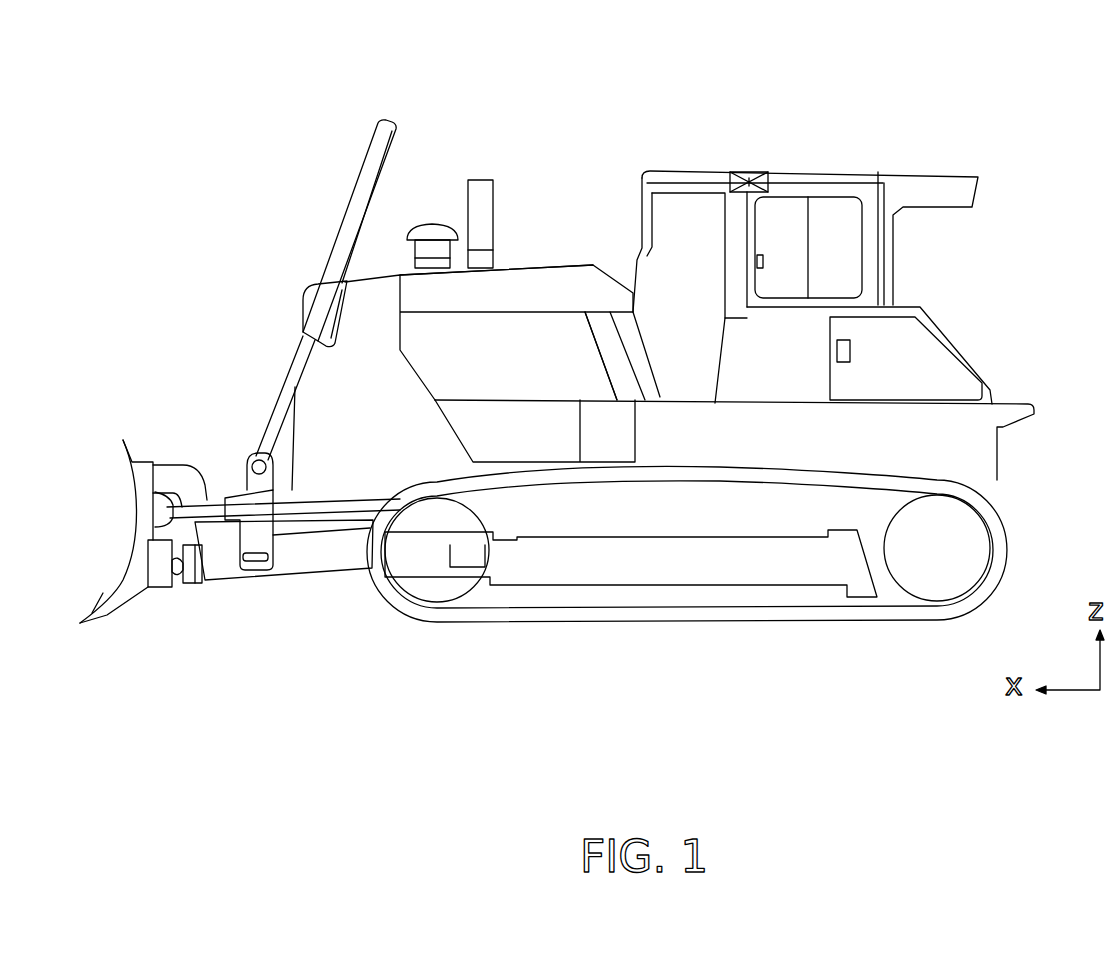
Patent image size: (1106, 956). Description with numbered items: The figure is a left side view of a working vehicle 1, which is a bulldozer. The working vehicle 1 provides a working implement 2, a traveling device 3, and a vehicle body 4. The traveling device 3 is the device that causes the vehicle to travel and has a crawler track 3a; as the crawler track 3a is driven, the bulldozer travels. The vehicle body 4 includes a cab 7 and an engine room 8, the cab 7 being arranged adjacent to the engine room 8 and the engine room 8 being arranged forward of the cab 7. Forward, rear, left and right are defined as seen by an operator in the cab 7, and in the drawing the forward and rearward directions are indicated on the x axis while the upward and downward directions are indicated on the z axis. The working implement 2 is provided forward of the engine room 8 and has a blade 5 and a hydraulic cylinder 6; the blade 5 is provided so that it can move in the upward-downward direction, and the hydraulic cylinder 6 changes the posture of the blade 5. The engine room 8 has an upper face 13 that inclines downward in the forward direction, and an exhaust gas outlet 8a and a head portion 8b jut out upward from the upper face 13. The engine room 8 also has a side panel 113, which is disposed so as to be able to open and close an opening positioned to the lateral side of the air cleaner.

The working vehicle 1 is at (268, 112).
The working implement 2 is at (200, 437).
The traveling device 3 is at (524, 630).
The crawler track 3a is at (638, 628).
The vehicle body 4 is at (816, 110).
The blade 5 is at (143, 510).
The hydraulic cylinder 6 is at (293, 380).
The cab 7 is at (675, 167).
The engine room 8 is at (565, 282).
The exhaust gas outlet 8a is at (482, 180).
The head portion 8b is at (432, 222).
The upper face 13 is at (525, 268).
The side panel 113 is at (583, 355).